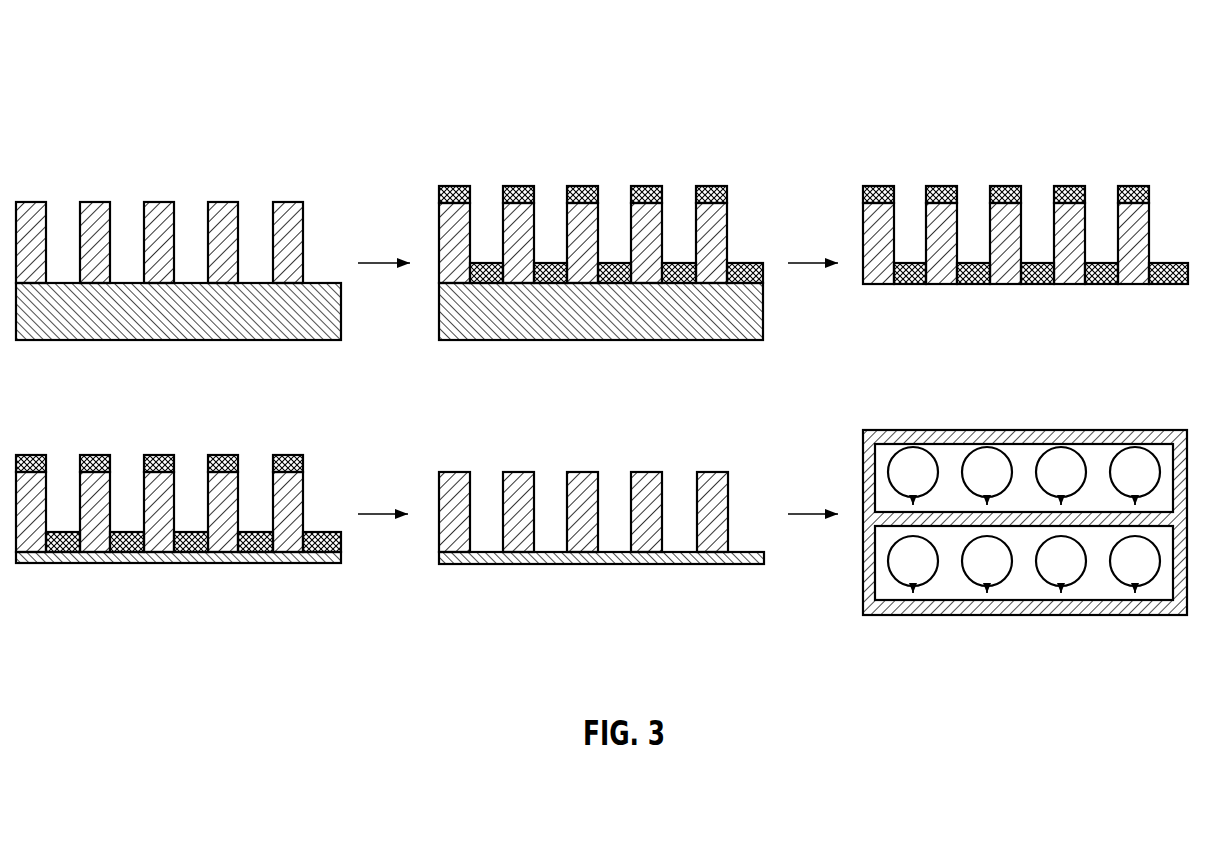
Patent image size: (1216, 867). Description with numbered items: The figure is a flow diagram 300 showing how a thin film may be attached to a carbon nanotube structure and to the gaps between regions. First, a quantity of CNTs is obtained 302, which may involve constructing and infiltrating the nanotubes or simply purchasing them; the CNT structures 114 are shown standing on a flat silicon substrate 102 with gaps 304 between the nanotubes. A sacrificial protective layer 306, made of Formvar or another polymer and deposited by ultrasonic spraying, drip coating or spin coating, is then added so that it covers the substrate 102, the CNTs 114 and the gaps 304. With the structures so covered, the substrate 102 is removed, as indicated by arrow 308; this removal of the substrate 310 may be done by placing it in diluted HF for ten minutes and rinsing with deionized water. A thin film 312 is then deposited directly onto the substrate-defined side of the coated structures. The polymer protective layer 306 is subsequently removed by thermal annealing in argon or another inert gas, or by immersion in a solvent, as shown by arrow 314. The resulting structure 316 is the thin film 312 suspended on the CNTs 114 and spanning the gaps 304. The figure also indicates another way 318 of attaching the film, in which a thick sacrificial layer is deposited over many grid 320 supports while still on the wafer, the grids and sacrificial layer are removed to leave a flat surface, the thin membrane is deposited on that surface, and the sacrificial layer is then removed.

The flow diagram 300 is at (112, 78).
The obtaining of CNTs 302 is at (163, 194).
The gaps 304 is at (118, 210).
The protective layer 306 is at (517, 186).
The carbon nanotube structures 114 is at (728, 207).
The silicon substrate 102 is at (562, 323).
The arrow 308 is at (815, 265).
The substrate 310 is at (966, 290).
The thin film 312 is at (289, 565).
The arrow 314 is at (390, 516).
The resulting structure 316 is at (551, 578).
The way of attaching thin film 318 is at (811, 525).
The grid 320 is at (909, 628).